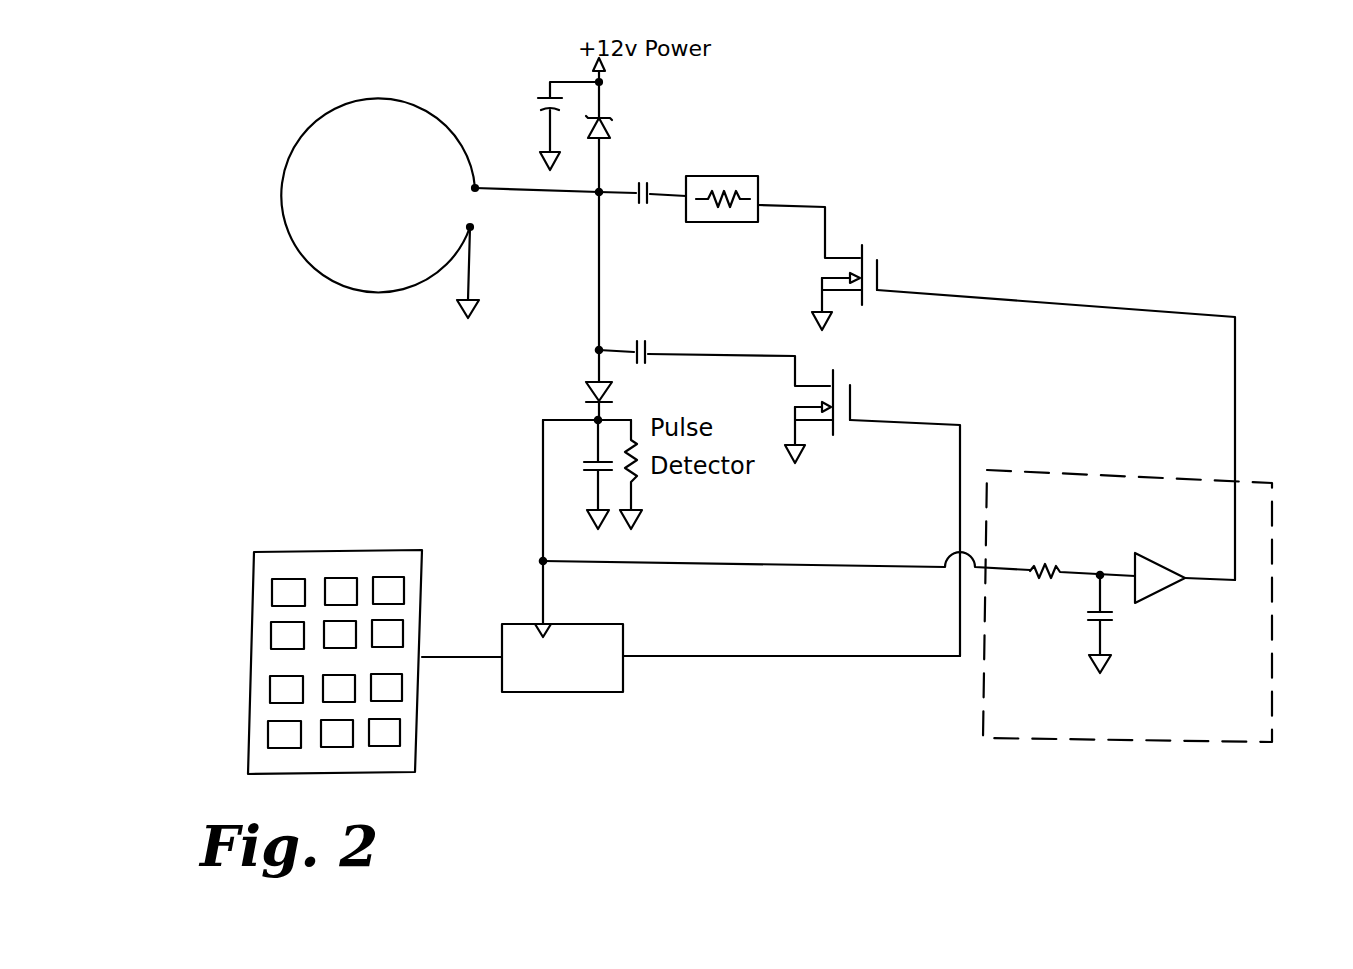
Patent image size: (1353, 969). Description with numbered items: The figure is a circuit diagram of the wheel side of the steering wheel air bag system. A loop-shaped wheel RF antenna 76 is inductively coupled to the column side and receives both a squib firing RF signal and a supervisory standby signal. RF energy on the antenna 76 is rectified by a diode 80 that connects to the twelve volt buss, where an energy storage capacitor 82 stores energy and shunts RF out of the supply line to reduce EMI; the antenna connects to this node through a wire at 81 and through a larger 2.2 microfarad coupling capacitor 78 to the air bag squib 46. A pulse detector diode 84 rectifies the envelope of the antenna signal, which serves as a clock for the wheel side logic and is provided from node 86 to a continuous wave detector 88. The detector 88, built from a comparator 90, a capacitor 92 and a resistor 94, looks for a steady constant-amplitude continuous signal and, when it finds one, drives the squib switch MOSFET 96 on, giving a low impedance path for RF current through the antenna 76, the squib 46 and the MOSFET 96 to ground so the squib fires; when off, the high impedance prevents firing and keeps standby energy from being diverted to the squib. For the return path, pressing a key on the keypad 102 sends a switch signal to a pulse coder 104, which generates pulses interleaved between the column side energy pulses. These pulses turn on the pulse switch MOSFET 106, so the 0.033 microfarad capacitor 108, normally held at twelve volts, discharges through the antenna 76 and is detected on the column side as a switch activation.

The wheel RF antenna 76 is at (299, 135).
The energy storage capacitor 82 is at (540, 112).
The diode 80 is at (612, 128).
The antenna connection node 81 is at (597, 196).
The 2.2uF capacitor 78 is at (652, 188).
The squib 46 is at (760, 193).
The squib switch MOSFET 96 is at (865, 245).
The 0.033 microfarad capacitor 108 is at (648, 358).
The pulse switch MOSFET 106 is at (835, 435).
The pulse detector diode 84 is at (593, 383).
The node 86 is at (541, 557).
The keypad 102 is at (284, 552).
The pulse coder 104 is at (600, 690).
The continuous wave detector 88 is at (1105, 743).
The resistor 94 is at (1046, 578).
The capacitor 92 is at (1106, 621).
The comparator 90 is at (1168, 594).